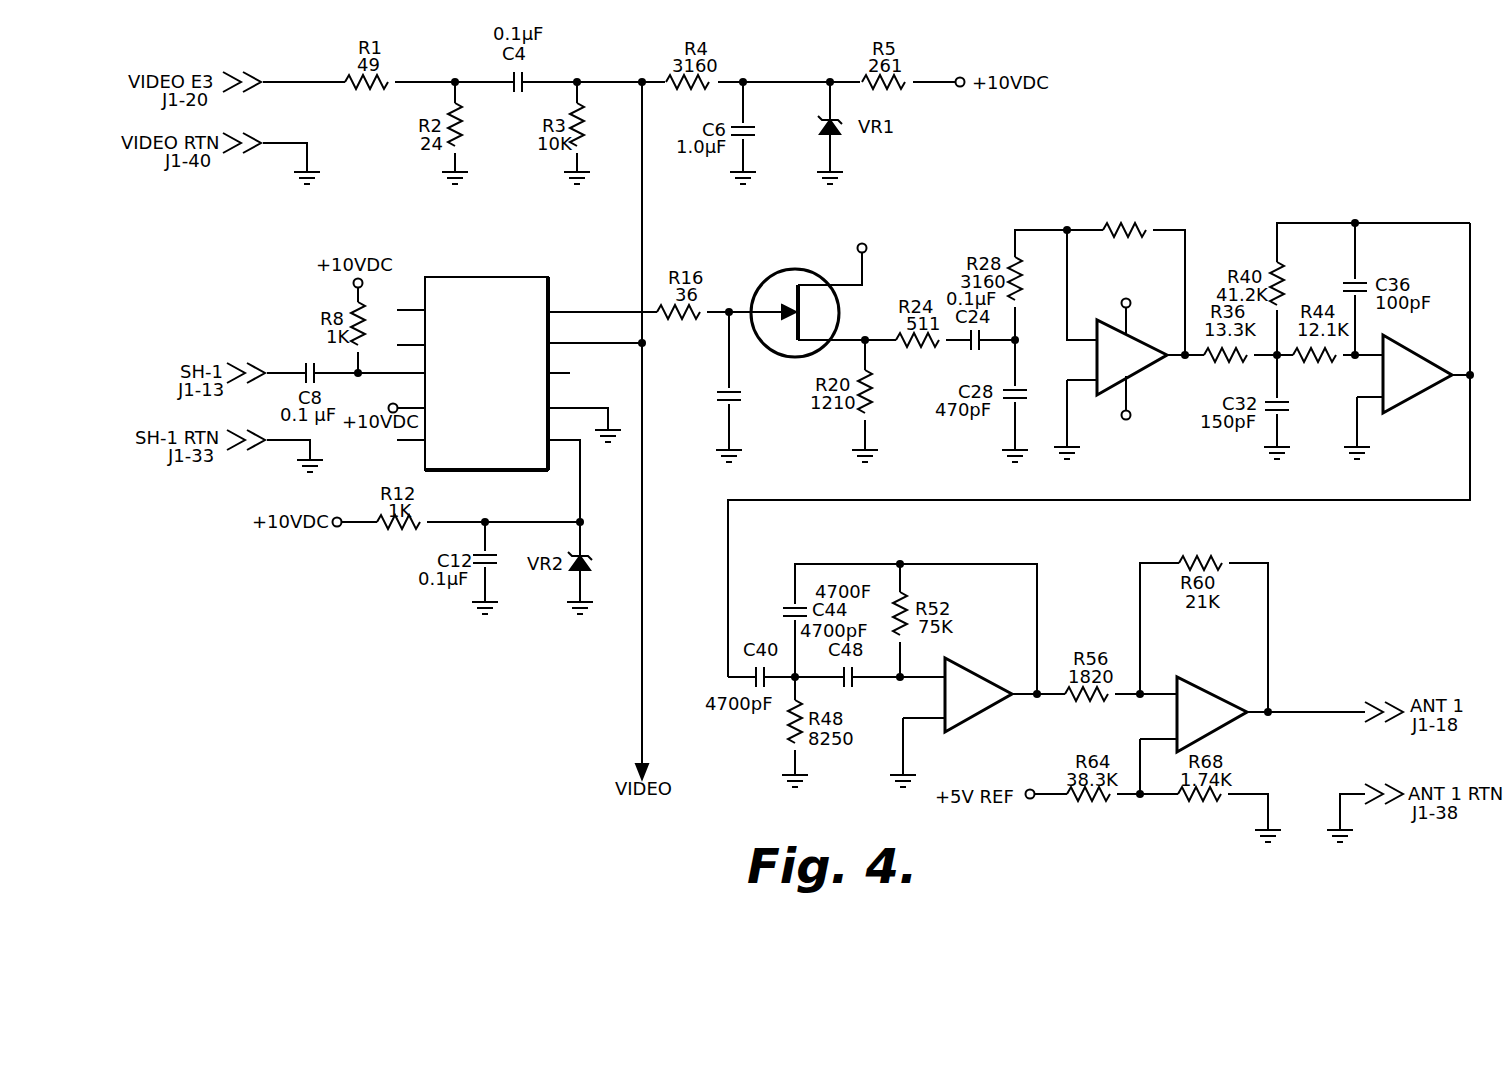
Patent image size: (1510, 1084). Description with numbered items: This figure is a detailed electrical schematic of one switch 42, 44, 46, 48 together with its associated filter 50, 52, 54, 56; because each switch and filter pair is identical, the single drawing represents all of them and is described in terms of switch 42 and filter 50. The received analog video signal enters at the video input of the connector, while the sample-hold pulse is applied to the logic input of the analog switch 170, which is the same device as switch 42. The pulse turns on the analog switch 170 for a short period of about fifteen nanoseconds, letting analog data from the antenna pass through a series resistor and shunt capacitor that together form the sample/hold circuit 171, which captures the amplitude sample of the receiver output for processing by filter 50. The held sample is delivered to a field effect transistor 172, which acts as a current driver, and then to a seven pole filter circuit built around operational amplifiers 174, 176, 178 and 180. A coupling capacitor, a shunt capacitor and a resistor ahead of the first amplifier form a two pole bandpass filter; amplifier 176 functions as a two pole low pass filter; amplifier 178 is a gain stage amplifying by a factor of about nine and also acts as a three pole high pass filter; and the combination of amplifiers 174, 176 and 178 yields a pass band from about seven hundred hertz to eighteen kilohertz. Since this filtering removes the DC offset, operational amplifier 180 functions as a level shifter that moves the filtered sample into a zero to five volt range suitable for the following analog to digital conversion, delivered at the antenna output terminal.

The switch 42 is at (442, 270).
The switch 44 is at (398, 347).
The switch 46 is at (418, 347).
The switch 48 is at (437, 347).
The filter 50 is at (1115, 148).
The filter 52 is at (1240, 287).
The filter 54 is at (1240, 287).
The filter 56 is at (1240, 287).
The analog switch 170 is at (483, 276).
The sample/hold circuit 171 is at (722, 320).
The field effect transistor 172 is at (791, 273).
The operational amplifier 174 is at (1138, 377).
The operational amplifier 176 is at (1398, 413).
The operational amplifier 178 is at (958, 667).
The operational amplifier 180 is at (1192, 679).